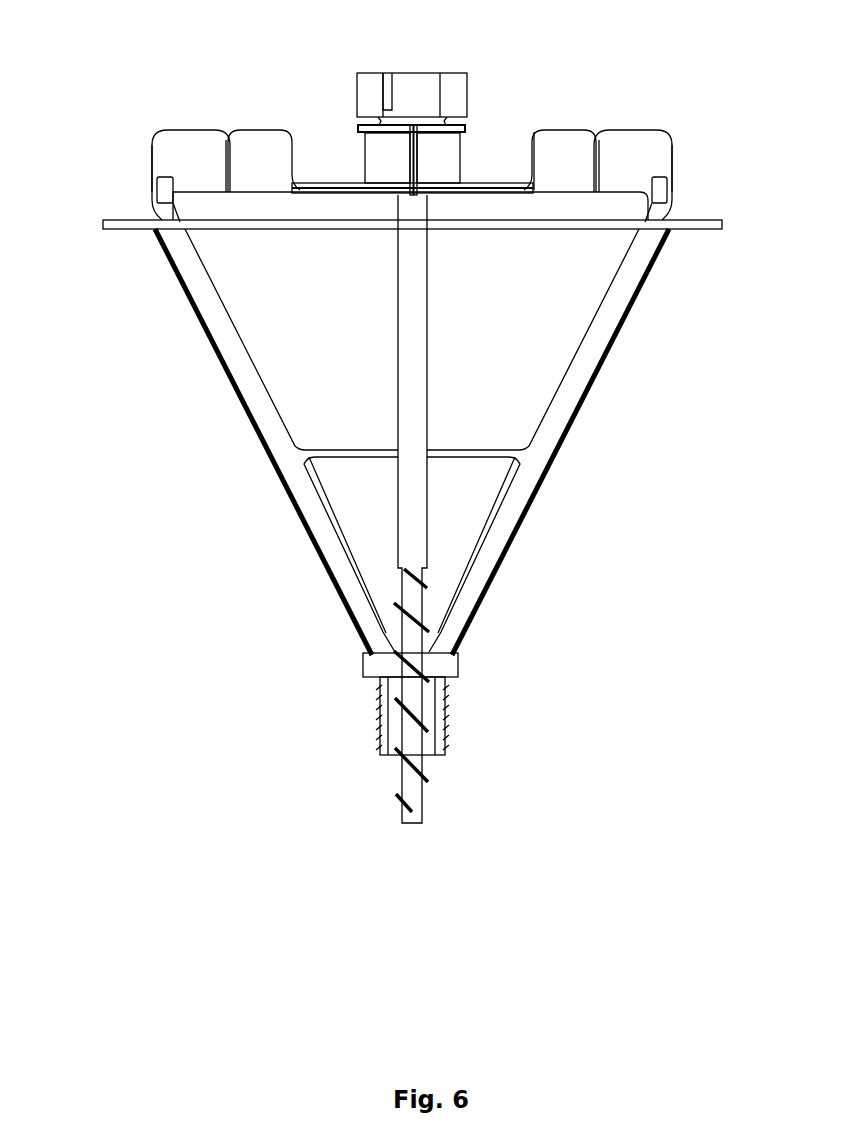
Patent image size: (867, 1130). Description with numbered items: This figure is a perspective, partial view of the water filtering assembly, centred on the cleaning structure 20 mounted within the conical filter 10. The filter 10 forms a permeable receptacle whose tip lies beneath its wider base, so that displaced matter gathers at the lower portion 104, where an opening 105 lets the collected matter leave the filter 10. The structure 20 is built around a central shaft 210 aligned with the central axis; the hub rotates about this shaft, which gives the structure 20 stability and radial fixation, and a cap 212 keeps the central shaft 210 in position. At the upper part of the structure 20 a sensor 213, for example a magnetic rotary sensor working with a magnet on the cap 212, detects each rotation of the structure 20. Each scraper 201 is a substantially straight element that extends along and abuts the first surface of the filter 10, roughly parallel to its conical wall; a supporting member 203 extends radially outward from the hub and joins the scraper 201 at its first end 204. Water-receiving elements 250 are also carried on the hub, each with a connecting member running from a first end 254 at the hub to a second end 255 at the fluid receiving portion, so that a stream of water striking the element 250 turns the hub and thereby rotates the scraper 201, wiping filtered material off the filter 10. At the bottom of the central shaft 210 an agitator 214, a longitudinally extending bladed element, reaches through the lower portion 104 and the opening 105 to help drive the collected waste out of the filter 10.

The filter 10 is at (663, 252).
The structure for cleaning the filter 20 is at (245, 347).
The lower portion 104 is at (450, 653).
The opening 105 is at (393, 758).
The scraper 201 is at (278, 427).
The supporting member 203 is at (497, 187).
The first end 204 is at (658, 190).
The central shaft 210 is at (428, 323).
The cap 212 is at (366, 76).
The sensor 213 is at (385, 83).
The agitator 214 is at (413, 797).
The element 250 is at (263, 150).
The first end 254 is at (460, 188).
The second end 255 is at (627, 192).